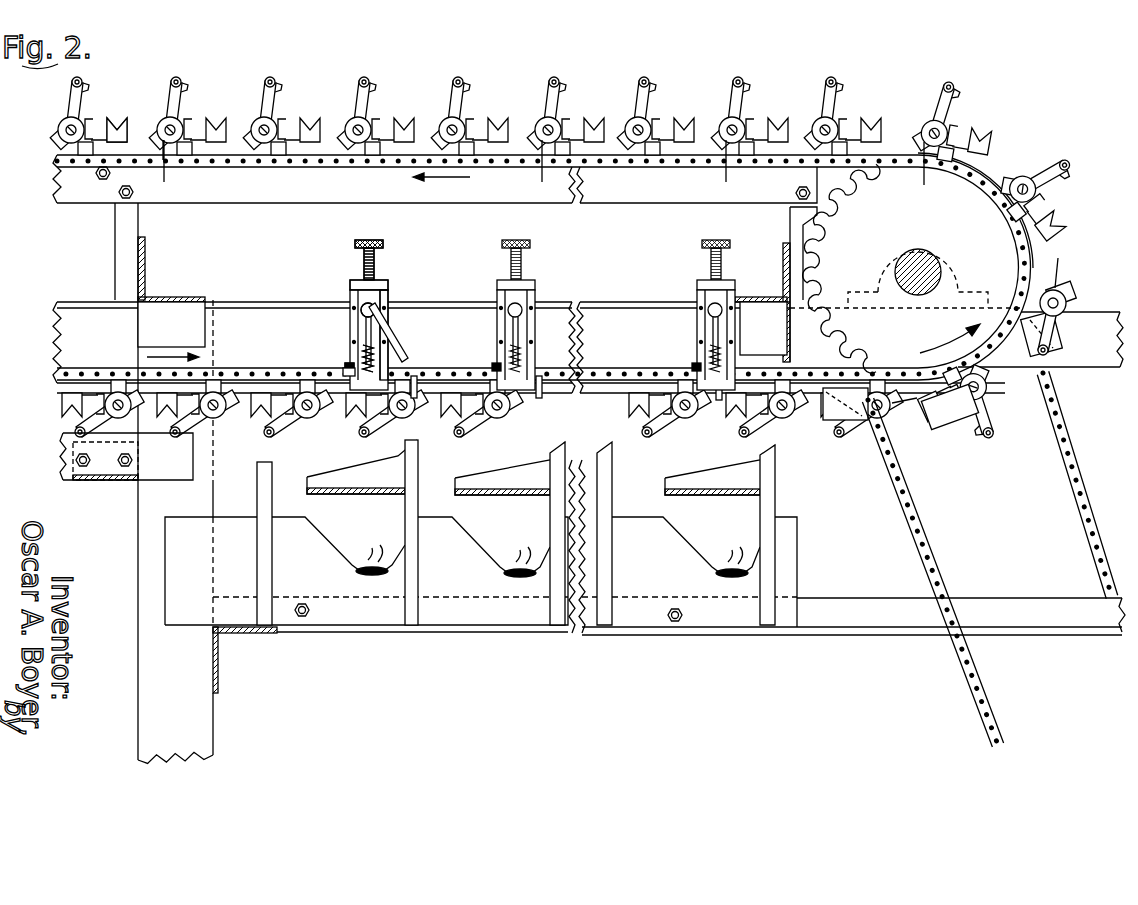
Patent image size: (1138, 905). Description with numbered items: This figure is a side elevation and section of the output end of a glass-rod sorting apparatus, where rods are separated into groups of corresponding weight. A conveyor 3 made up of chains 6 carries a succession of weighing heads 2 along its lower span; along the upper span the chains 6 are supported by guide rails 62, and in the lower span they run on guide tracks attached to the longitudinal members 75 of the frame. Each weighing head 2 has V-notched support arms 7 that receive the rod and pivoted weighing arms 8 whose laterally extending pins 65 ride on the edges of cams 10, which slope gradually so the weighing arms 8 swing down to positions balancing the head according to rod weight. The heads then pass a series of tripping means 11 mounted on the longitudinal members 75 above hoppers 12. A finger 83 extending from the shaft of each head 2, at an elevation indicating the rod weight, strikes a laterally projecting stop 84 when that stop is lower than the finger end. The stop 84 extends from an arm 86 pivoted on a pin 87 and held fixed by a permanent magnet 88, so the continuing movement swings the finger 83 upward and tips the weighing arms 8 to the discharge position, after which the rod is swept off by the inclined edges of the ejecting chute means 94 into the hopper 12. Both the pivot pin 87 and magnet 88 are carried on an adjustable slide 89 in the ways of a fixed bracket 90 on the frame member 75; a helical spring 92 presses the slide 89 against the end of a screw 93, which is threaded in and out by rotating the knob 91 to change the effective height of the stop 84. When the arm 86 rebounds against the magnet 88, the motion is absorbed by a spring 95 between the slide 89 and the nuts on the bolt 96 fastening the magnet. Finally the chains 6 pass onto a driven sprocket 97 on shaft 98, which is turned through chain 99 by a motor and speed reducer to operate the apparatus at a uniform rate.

The weighing head 2 is at (580, 87).
The conveyor 3 is at (60, 152).
The chains 6 is at (303, 170).
The support arms 7 is at (222, 128).
The weighing arms 8 is at (165, 92).
The cams 10 is at (173, 470).
The tripping means 11 is at (476, 266).
The hopper 12 is at (332, 548).
The guide rails 62 is at (322, 203).
The pins 65 is at (258, 83).
The longitudinal members 75 is at (95, 312).
The finger 83 is at (170, 170).
The stop 84 is at (418, 382).
The arm 86 is at (388, 330).
The pivot pin 87 is at (362, 313).
The permanent magnet 88 is at (350, 368).
The slide 89 is at (355, 290).
The bracket 90 is at (352, 300).
The knob 91 is at (372, 242).
The helical spring 92 is at (398, 346).
The screw 93 is at (364, 272).
The ejecting chute means 94 is at (378, 466).
The spring 95 is at (357, 350).
The bolt 96 is at (350, 365).
The driven sprocket 97 is at (965, 195).
The shaft 98 is at (940, 262).
The chain 99 is at (1062, 463).